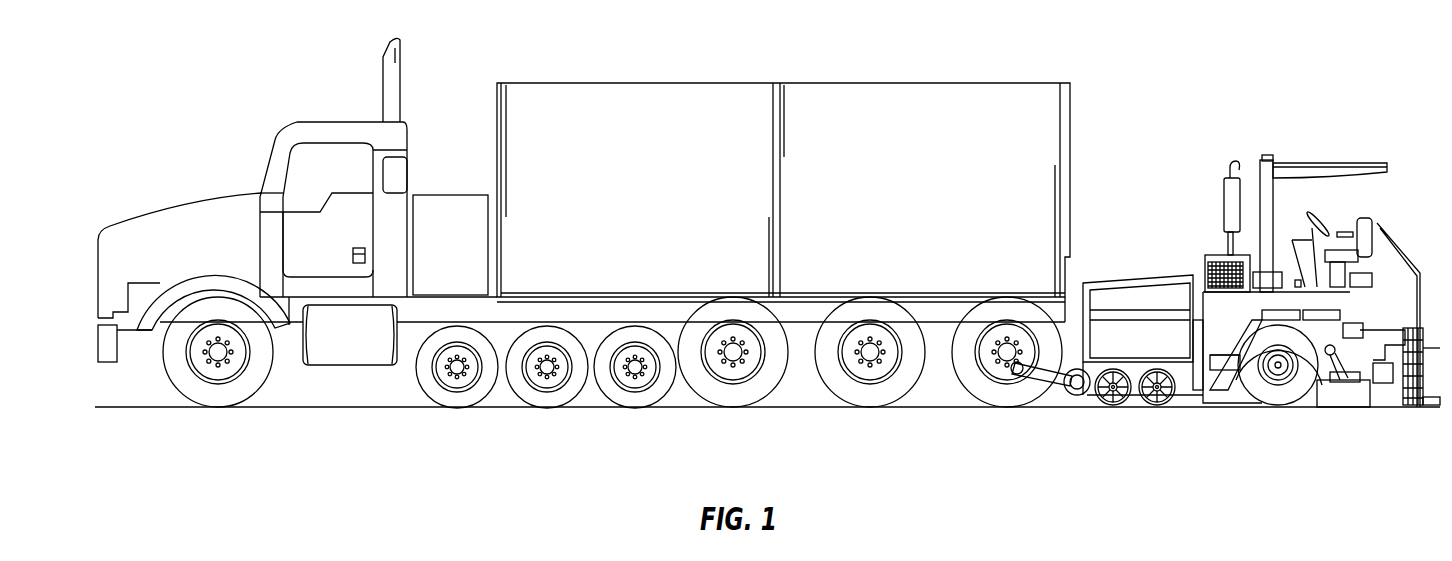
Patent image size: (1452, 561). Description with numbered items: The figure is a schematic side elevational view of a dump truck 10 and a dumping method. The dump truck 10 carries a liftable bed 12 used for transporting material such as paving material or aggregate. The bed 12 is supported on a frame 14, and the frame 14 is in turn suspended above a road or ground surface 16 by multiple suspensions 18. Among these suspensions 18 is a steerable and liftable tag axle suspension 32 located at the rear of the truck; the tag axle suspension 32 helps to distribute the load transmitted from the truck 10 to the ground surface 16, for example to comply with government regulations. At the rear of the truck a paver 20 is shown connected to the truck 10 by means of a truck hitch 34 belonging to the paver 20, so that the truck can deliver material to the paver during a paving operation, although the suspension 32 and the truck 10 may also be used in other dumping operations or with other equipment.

The dump truck 10 is at (293, 122).
The liftable bed 12 is at (677, 82).
The frame 14 is at (412, 323).
The ground surface 16 is at (262, 406).
The suspensions 18 is at (488, 390).
The paver 20 is at (1327, 162).
The tag axle suspension 32 is at (953, 393).
The truck hitch 34 is at (1073, 404).